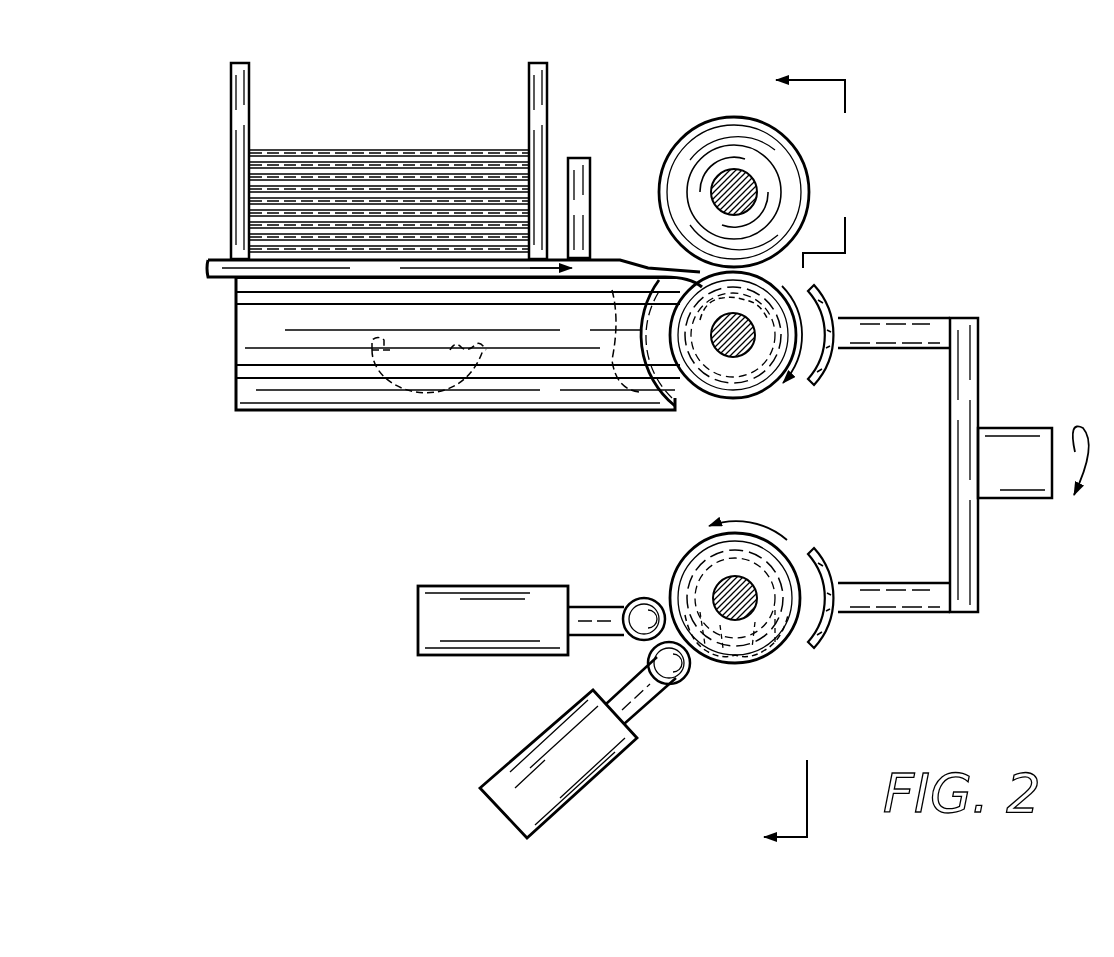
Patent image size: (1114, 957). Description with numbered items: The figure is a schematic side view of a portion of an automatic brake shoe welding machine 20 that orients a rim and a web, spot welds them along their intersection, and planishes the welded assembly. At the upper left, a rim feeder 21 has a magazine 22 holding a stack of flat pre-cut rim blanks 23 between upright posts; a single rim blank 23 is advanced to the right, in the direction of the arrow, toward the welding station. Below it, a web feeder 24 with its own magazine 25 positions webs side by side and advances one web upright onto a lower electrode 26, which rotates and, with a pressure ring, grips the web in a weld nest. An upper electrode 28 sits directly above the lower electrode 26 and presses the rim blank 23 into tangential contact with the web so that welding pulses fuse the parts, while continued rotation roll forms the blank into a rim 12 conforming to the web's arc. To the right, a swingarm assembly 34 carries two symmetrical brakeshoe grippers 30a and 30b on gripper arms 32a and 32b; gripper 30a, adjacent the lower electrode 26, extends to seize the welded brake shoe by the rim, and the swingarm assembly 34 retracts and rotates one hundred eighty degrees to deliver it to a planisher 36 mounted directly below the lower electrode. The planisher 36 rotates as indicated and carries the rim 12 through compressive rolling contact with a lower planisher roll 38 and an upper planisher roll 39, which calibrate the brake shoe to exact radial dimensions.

The automatic brake shoe welding machine 20 is at (609, 44).
The rim feeder 21 is at (381, 67).
The magazine 22 is at (240, 100).
The rim blanks 23 is at (403, 170).
The web feeder 24 is at (369, 416).
The magazine 25 is at (522, 392).
The lower electrode 26 is at (738, 404).
The upper electrode 28 is at (711, 117).
The brakeshoe gripper 30a is at (840, 297).
The brakeshoe gripper 30b is at (842, 640).
The gripper arm 32a is at (912, 343).
The gripper arm 32b is at (866, 590).
The swingarm assembly 34 is at (1001, 404).
The planisher 36 is at (689, 543).
The lower planisher roll 38 is at (681, 694).
The upper planisher roll 39 is at (643, 594).
The rim 12 is at (752, 661).